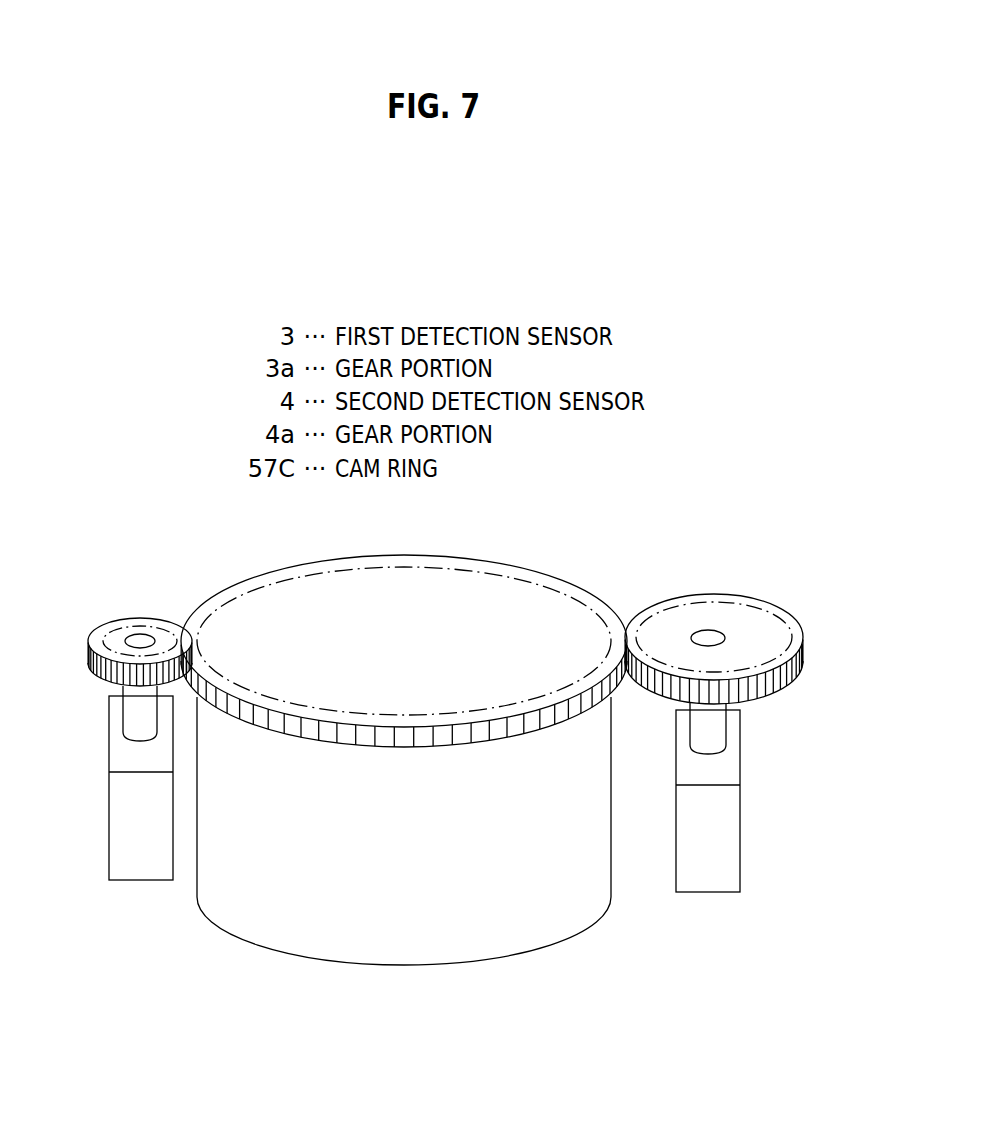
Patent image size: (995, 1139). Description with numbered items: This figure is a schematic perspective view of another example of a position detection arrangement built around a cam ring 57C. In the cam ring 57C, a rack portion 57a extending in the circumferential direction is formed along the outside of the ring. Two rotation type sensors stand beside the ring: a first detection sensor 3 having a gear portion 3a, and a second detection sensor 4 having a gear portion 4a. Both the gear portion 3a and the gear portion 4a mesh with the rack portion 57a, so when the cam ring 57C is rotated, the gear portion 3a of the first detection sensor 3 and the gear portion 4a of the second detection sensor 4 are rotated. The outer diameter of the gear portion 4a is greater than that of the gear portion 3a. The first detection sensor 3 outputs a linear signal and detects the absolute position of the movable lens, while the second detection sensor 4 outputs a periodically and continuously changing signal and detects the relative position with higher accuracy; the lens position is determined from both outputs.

The first detection sensor 3 is at (135, 717).
The gear portion 3a is at (97, 640).
The second detection sensor 4 is at (712, 732).
The gear portion 4a is at (795, 618).
The cam ring 57C is at (325, 925).
The rack portion 57a is at (520, 728).